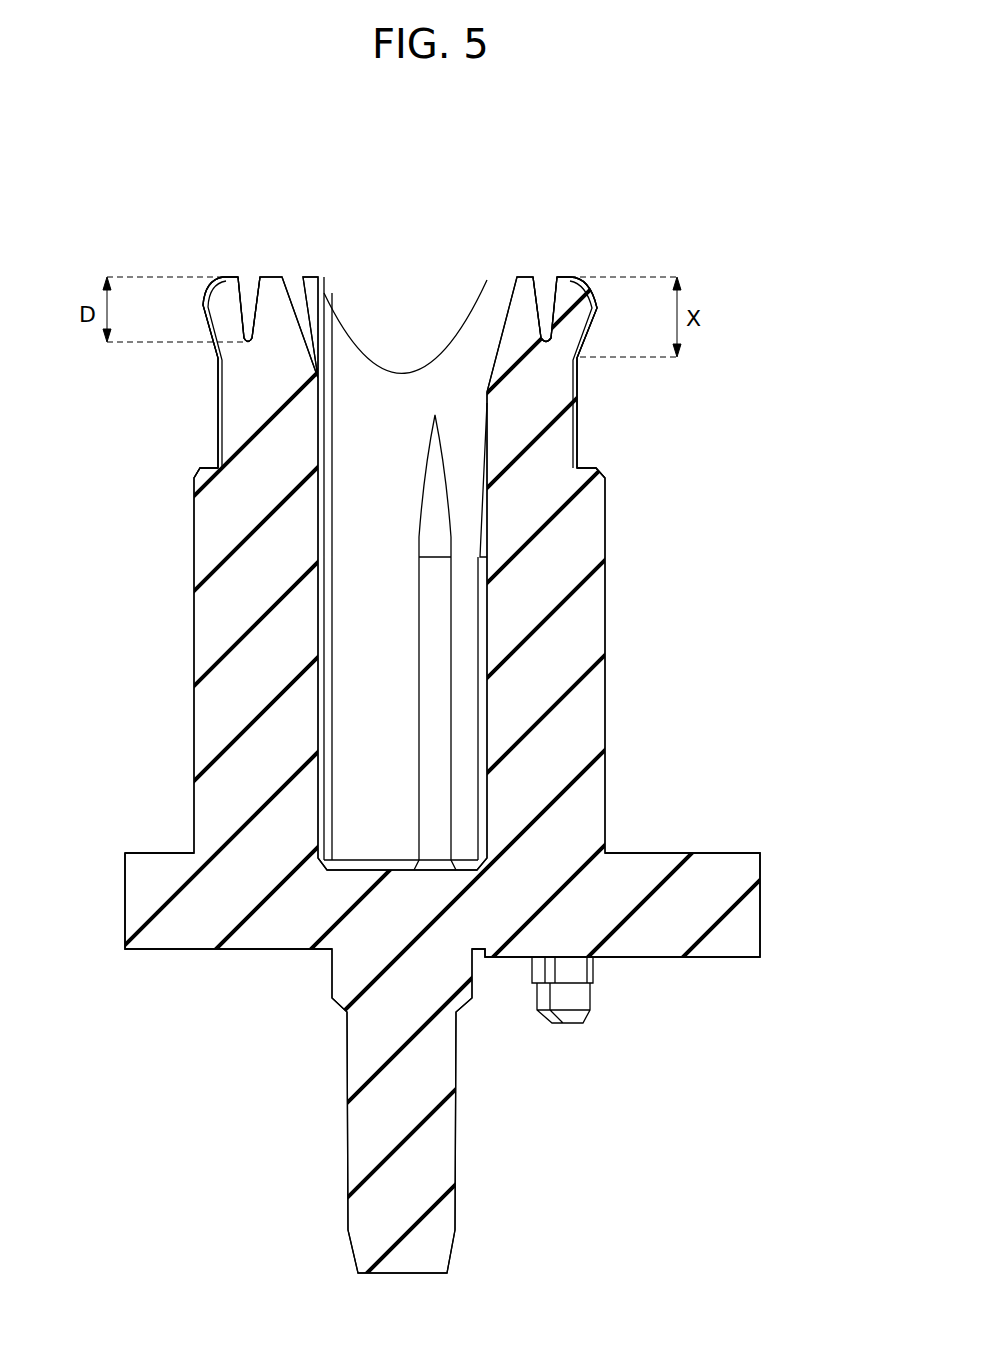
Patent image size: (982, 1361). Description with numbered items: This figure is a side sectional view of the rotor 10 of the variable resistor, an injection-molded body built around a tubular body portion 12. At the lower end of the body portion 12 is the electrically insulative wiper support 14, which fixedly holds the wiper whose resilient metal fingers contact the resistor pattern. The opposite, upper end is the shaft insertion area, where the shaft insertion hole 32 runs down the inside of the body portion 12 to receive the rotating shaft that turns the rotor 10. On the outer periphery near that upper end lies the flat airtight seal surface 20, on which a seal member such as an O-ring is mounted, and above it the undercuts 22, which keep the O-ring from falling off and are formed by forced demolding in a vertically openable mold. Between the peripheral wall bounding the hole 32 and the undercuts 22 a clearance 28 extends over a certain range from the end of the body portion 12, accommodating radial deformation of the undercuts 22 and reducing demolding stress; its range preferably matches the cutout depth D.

The rotor 10 is at (722, 492).
The tubular body portion 12 is at (598, 636).
The wiper support 14 is at (752, 910).
The airtight seal surface 20 is at (597, 463).
The undercuts 22 is at (216, 303).
The clearance 28 is at (250, 292).
The shaft insertion hole 32 is at (404, 308).